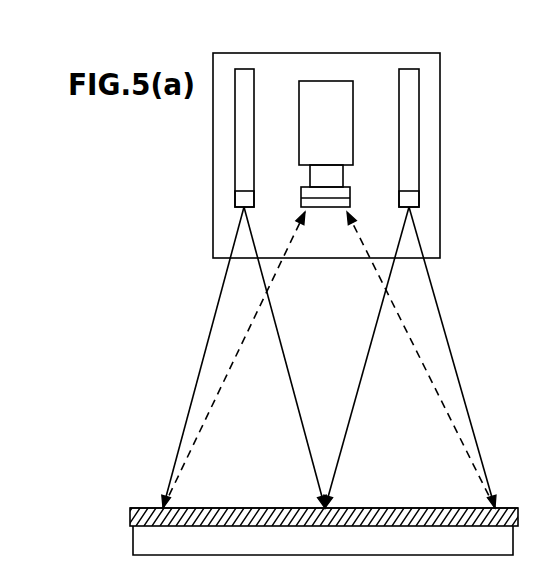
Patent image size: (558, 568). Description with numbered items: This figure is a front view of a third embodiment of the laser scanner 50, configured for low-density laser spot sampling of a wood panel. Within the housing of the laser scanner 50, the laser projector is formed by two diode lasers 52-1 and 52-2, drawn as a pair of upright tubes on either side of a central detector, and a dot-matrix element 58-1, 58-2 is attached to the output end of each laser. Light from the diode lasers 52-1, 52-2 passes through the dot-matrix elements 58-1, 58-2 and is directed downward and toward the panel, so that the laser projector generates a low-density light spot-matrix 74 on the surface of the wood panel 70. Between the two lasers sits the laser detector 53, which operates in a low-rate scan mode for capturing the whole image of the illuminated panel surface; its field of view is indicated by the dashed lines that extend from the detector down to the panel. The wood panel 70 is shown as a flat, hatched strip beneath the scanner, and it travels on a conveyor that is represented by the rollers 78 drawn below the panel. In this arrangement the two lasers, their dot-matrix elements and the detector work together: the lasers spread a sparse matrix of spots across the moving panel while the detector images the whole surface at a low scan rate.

The laser scanner 50 is at (440, 77).
The diode laser 52-1 is at (235, 142).
The diode laser 52-2 is at (419, 142).
The laser detector 53 is at (326, 81).
The dot-matrix element 58-1 is at (243, 198).
The dot-matrix element 58-2 is at (408, 198).
The wood panel 70 is at (272, 508).
The low-density light spot-matrix 74 is at (496, 507).
The rollers 78 is at (385, 545).